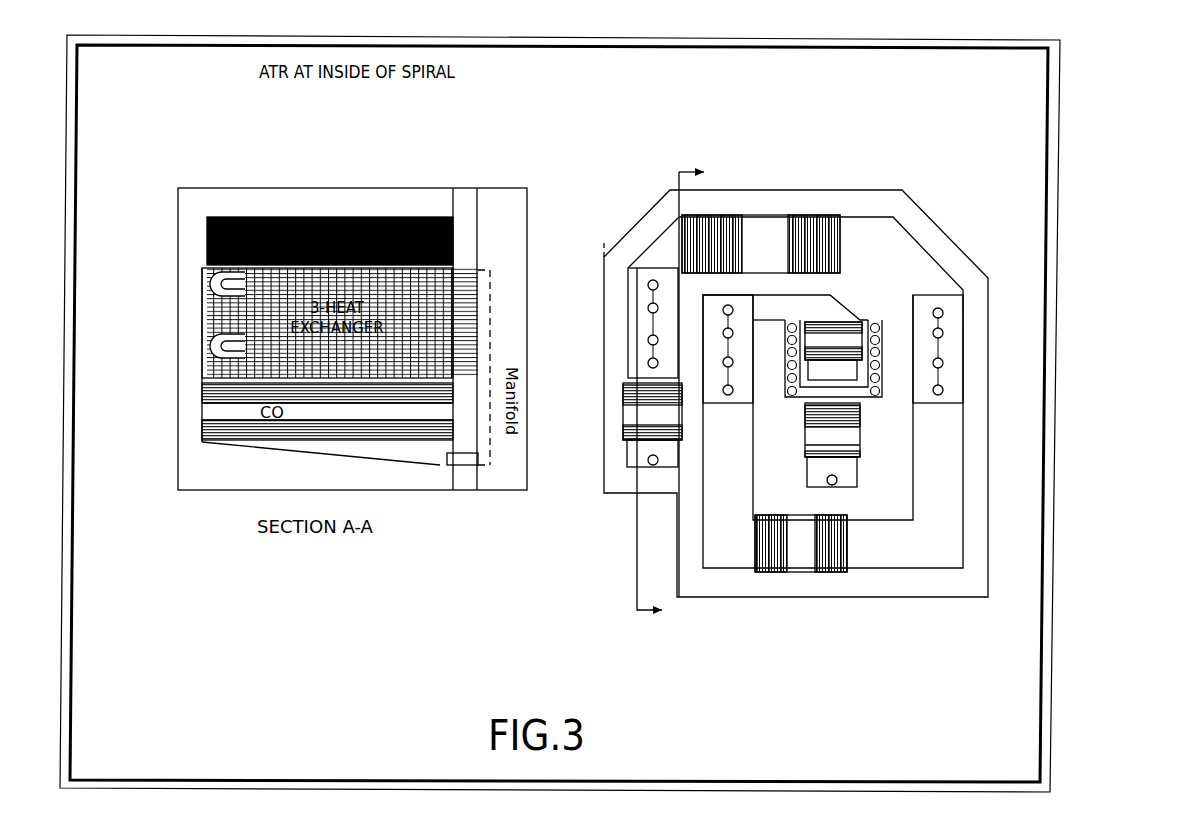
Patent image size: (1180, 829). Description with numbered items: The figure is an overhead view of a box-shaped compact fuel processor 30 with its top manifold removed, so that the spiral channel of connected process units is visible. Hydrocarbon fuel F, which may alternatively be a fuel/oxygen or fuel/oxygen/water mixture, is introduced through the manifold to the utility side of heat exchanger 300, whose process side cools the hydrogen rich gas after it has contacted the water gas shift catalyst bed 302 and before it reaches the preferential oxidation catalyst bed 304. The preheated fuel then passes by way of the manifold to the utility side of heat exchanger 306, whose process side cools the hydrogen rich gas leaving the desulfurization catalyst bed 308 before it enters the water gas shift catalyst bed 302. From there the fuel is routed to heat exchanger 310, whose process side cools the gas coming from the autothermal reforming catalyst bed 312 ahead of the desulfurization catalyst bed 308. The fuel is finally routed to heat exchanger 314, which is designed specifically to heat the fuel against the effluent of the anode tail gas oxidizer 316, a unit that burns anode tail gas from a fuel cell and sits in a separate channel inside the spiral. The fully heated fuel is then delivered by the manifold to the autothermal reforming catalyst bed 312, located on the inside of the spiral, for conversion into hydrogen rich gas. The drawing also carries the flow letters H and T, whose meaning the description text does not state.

The box-shaped fuel processor 30 is at (950, 598).
The heat exchanger 300 is at (640, 277).
The water gas shift catalyst bed 302 is at (818, 230).
The preferential oxidation catalyst bed 304 is at (623, 436).
The heat exchanger 306 is at (958, 310).
The desulfurization catalyst bed 308 is at (830, 572).
The heat exchanger 310 is at (713, 393).
The autothermal reforming catalyst bed 312 is at (853, 325).
The heat exchanger 314 is at (787, 385).
The anode tail gas oxidizer 316 is at (857, 452).
The hydrocarbon fuel F is at (832, 376).
The hydrogen outlet H is at (653, 460).
The tail gas inlet T is at (838, 489).